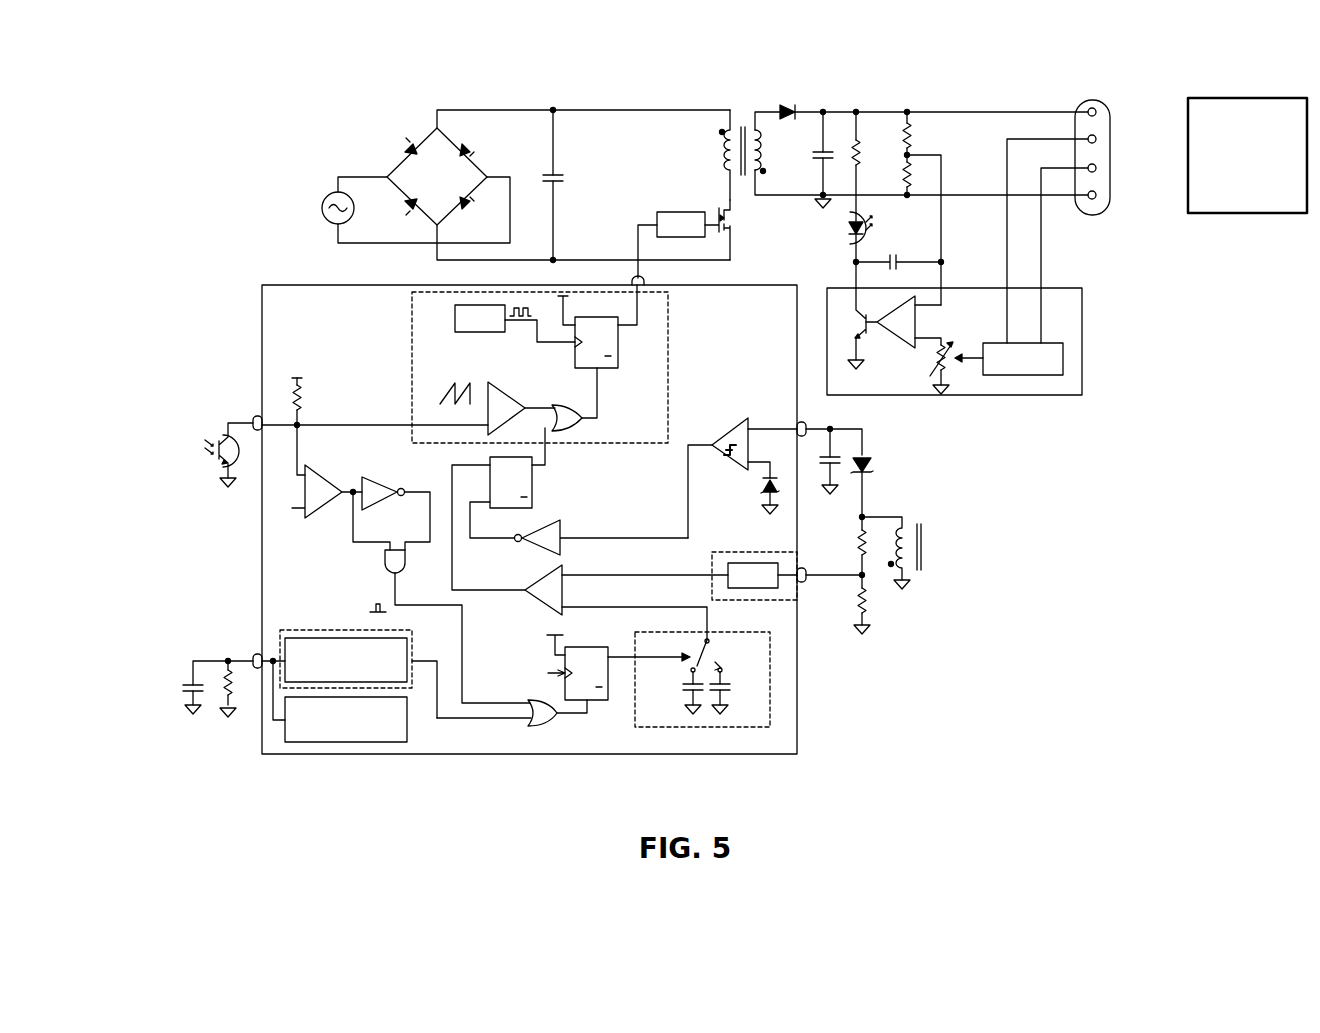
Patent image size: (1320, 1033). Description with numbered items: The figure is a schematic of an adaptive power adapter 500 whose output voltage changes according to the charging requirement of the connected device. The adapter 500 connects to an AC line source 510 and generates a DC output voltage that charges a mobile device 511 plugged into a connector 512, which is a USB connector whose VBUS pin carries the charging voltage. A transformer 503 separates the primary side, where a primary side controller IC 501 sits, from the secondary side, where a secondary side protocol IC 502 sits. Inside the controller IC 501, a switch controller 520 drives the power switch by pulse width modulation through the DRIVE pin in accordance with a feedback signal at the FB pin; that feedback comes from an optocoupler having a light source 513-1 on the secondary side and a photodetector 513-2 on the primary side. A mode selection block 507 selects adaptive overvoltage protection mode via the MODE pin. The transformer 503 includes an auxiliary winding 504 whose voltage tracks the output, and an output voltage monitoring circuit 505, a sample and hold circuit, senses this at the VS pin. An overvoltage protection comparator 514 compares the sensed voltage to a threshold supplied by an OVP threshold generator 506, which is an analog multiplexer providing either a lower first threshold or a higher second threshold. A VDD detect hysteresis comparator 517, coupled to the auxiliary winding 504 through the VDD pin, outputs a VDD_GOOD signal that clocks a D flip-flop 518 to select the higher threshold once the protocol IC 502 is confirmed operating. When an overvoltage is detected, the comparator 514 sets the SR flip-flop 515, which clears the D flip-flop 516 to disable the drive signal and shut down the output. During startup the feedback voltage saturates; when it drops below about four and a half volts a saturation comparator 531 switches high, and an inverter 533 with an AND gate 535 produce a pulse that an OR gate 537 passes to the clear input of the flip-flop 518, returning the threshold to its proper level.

The adaptive power adapter 500 is at (348, 95).
The primary side controller IC 501 is at (335, 754).
The secondary side protocol IC 502 is at (992, 395).
The transformer 503 is at (740, 110).
The auxiliary winding 504 is at (930, 556).
The output voltage monitoring circuit 505 is at (748, 552).
The OVP threshold generator 506 is at (680, 727).
The mode selection block 507 is at (325, 630).
The AC line source 510 is at (329, 196).
The mobile device 511 is at (1236, 98).
The connector 512 is at (1094, 215).
The light source 513-1 is at (838, 233).
The photodetector 513-2 is at (203, 458).
The overvoltage protection comparator 514 is at (540, 612).
The SR flip-flop 515 is at (534, 481).
The D flip-flop 516 is at (605, 370).
The VDD comparator 517 is at (735, 425).
The D flip-flop 518 is at (575, 647).
The switch controller 520 is at (412, 332).
The saturation comparator 531 is at (328, 512).
The inverter 533 is at (382, 478).
The AND gate 535 is at (382, 563).
The OR gate 537 is at (557, 720).